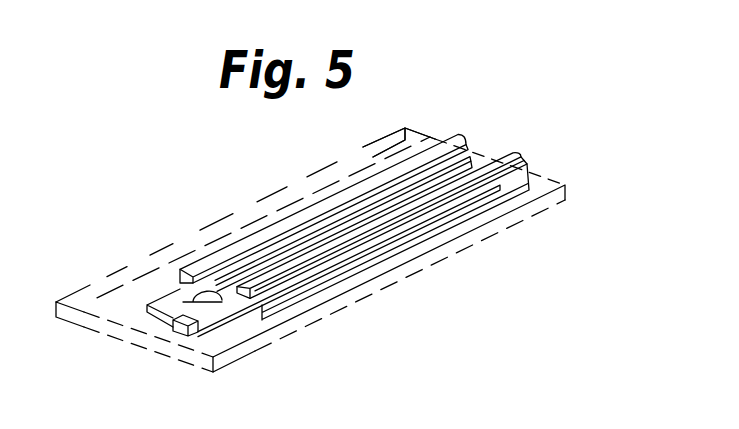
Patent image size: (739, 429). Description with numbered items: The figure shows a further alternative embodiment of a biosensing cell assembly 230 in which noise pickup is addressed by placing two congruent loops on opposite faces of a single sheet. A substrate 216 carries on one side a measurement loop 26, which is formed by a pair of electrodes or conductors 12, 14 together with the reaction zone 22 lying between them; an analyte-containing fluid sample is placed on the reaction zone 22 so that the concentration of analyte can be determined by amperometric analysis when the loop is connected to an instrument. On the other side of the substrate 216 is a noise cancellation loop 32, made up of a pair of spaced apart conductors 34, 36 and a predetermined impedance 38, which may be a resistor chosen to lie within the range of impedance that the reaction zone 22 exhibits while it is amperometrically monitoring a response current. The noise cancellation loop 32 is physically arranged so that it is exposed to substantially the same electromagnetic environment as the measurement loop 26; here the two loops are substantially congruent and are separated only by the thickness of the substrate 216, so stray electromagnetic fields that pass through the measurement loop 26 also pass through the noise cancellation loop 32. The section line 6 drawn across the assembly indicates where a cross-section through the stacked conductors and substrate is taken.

The conductor 12 is at (466, 138).
The conductor 14 is at (530, 149).
The reaction zone 22 is at (180, 286).
The measurement loop 26 is at (420, 118).
The noise cancellation loop 32 is at (332, 328).
The conductor 34 is at (475, 153).
The conductor 36 is at (536, 168).
The predetermined impedance 38 is at (186, 334).
The substrate 216 is at (247, 357).
The biosensing cell assembly 230 is at (560, 225).
The section line 6- 6 is at (133, 223).